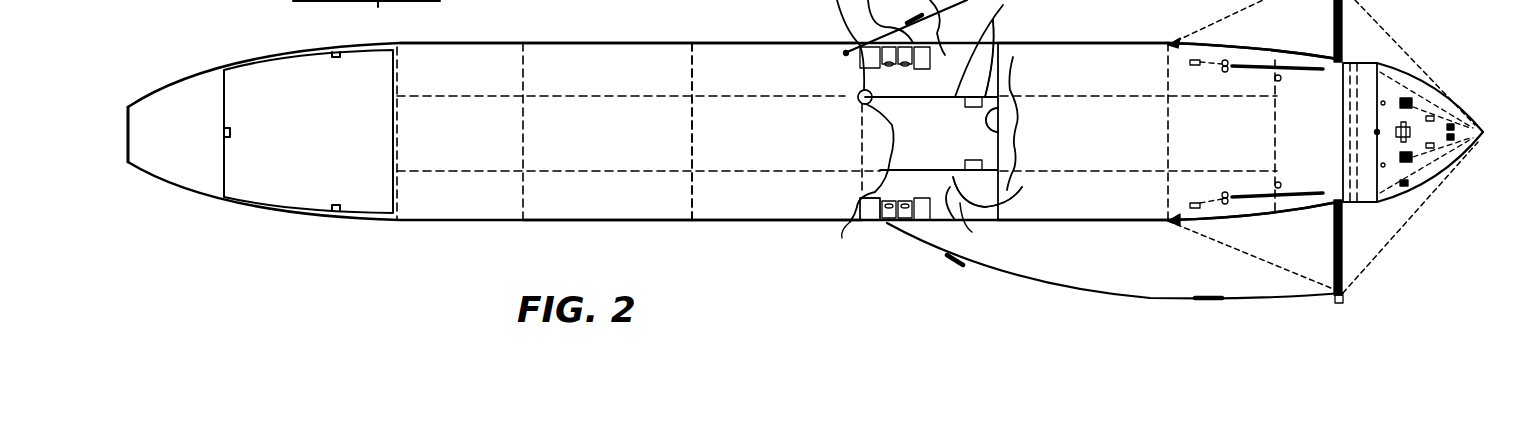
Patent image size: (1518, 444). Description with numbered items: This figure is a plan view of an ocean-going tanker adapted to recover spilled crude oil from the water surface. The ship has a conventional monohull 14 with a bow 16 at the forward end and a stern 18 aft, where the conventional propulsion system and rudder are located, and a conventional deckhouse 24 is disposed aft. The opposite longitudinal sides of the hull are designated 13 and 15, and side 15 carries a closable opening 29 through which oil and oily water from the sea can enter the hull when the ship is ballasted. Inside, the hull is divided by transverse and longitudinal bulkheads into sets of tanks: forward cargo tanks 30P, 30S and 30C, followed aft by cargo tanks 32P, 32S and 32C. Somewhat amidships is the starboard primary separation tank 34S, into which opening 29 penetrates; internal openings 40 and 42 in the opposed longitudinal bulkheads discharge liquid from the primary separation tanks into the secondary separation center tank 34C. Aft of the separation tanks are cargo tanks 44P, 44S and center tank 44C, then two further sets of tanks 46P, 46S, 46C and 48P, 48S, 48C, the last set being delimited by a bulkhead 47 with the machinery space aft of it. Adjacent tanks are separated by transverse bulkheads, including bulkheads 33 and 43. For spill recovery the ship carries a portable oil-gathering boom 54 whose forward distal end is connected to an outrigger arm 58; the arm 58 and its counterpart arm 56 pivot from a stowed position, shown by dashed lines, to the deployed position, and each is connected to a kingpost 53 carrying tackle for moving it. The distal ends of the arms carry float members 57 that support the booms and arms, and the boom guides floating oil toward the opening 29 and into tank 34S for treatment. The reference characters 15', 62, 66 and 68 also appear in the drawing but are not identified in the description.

The longitudinal side of the hull 13 is at (735, 0).
The monohull 14 is at (746, 224).
The longitudinal side of the hull 15 is at (683, 158).
The bulkhead 15' is at (338, 10).
The bow 16 is at (1481, 130).
The stern 18 is at (128, 164).
The deckhouse 24 is at (262, 216).
The closable opening 29 is at (893, 227).
The forward center cargo tank 30C is at (1236, 137).
The forward port cargo tank 30P is at (1246, 48).
The forward starboard cargo tank 30S is at (1240, 217).
The center cargo tank 32C is at (1138, 131).
The port cargo tank 32P is at (1072, 50).
The starboard cargo tank 32S is at (1080, 224).
The transverse bulkhead 33 is at (1013, 130).
The secondary separation center tank 34C is at (929, 111).
The starboard primary separation tank 34S is at (972, 232).
The internal opening 40 is at (993, 43).
The internal opening 42 is at (1007, 197).
The transverse bulkhead 43 is at (860, 113).
The center cargo tank 44C is at (778, 131).
The port cargo tank 44P is at (748, 54).
The starboard cargo tank 44S is at (778, 218).
The center tank 46C is at (607, 131).
The port tank 46P is at (638, 54).
The starboard tank 46S is at (580, 222).
The bulkhead 47 is at (400, 204).
The center tank 48C is at (638, 131).
The port tank 48P is at (462, 52).
The starboard tank 48S is at (466, 198).
The kingpost 53 is at (1340, 180).
The oil-gathering boom 54 is at (1097, 298).
The outrigger arm 56 is at (1273, 52).
The float member 57 is at (1340, 305).
The outrigger arm 58 is at (1285, 228).
The lower frame 62 is at (854, 230).
The hinge point 66 is at (1193, 34).
The swing arc 68 is at (1392, 25).